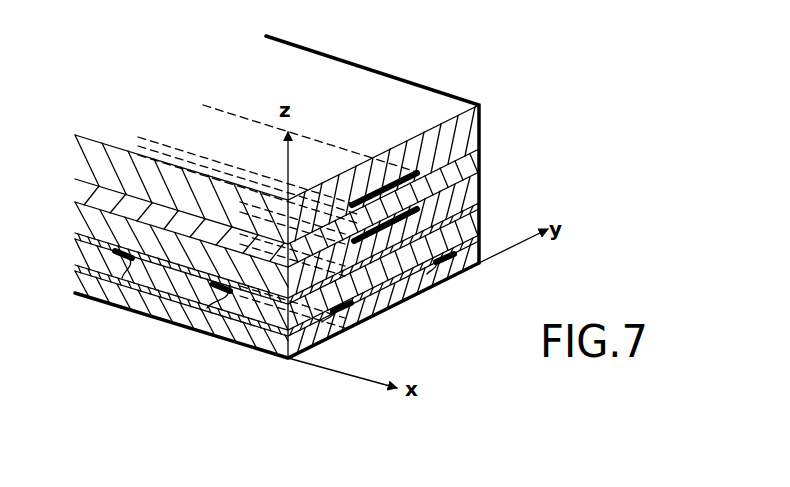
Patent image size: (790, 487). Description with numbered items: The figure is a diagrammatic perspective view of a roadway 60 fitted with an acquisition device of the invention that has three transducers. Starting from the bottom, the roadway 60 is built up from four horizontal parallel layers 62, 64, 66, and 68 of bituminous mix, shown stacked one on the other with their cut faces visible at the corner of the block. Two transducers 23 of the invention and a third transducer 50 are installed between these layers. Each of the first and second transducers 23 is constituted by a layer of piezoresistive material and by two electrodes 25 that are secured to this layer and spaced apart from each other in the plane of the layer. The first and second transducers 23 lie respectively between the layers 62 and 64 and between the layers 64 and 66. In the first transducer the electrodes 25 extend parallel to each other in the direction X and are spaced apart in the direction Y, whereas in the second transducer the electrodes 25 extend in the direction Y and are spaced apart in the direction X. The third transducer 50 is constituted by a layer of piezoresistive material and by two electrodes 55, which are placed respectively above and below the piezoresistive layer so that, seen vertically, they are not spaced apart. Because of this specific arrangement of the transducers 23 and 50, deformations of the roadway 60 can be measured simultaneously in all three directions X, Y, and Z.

The roadway 60 is at (498, 109).
The layer of bituminous mix 68 is at (82, 150).
The third transducer 50 is at (82, 188).
The layer of bituminous mix 66 is at (418, 208).
The electrodes 55 is at (418, 173).
The layer of bituminous mix 64 is at (452, 222).
The transducer 23 is at (71, 234).
The layer of bituminous mix 62 is at (470, 262).
The electrodes 25 is at (180, 318).